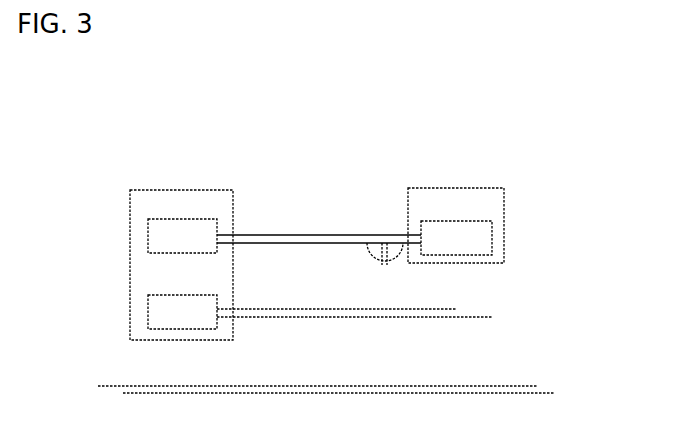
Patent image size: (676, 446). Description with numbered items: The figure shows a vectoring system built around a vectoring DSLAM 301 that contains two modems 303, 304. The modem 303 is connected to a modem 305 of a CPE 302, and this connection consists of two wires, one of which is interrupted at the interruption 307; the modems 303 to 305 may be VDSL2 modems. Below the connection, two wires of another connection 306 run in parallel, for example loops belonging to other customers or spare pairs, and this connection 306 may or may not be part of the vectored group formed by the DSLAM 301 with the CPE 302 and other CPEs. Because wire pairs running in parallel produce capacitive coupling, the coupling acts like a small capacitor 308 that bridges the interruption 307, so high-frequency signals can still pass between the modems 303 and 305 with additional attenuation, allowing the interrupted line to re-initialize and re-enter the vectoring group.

The vectoring DSLAM 301 is at (170, 190).
The CPE 302 is at (455, 188).
The modem 303 is at (148, 237).
The modem 304 is at (148, 312).
The modem 305 is at (492, 238).
The connection 306 is at (560, 367).
The interruption 307 is at (385, 240).
The capacitor 308 is at (373, 260).